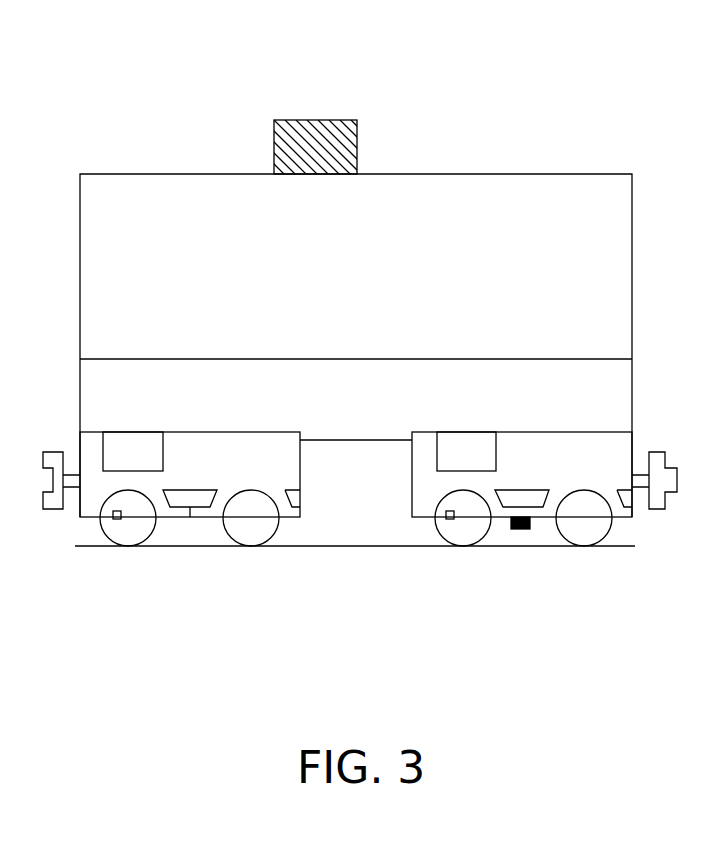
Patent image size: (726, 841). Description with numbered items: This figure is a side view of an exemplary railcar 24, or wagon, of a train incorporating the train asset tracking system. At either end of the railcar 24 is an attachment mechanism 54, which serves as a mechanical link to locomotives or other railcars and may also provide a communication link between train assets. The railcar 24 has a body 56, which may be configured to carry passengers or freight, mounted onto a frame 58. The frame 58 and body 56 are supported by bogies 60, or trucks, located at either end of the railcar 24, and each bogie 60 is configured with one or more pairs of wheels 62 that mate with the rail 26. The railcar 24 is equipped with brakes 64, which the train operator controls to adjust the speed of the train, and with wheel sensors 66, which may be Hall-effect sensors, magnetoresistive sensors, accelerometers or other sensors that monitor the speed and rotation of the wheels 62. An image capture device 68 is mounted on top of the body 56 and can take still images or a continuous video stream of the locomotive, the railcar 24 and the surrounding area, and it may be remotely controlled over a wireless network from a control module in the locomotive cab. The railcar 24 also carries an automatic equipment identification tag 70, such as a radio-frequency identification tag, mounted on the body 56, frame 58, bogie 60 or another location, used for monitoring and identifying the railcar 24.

The railcar 24 is at (553, 76).
The rail 26 is at (377, 556).
The attachment mechanism 54 is at (53, 452).
The body 56 is at (185, 174).
The frame 58 is at (358, 440).
The bogie 60 is at (287, 518).
The wheel 62 is at (598, 534).
The brake 64 is at (190, 507).
The wheel sensor 66 is at (117, 519).
The image capture device 68 is at (317, 120).
The automatic equipment identification tag 70 is at (523, 529).